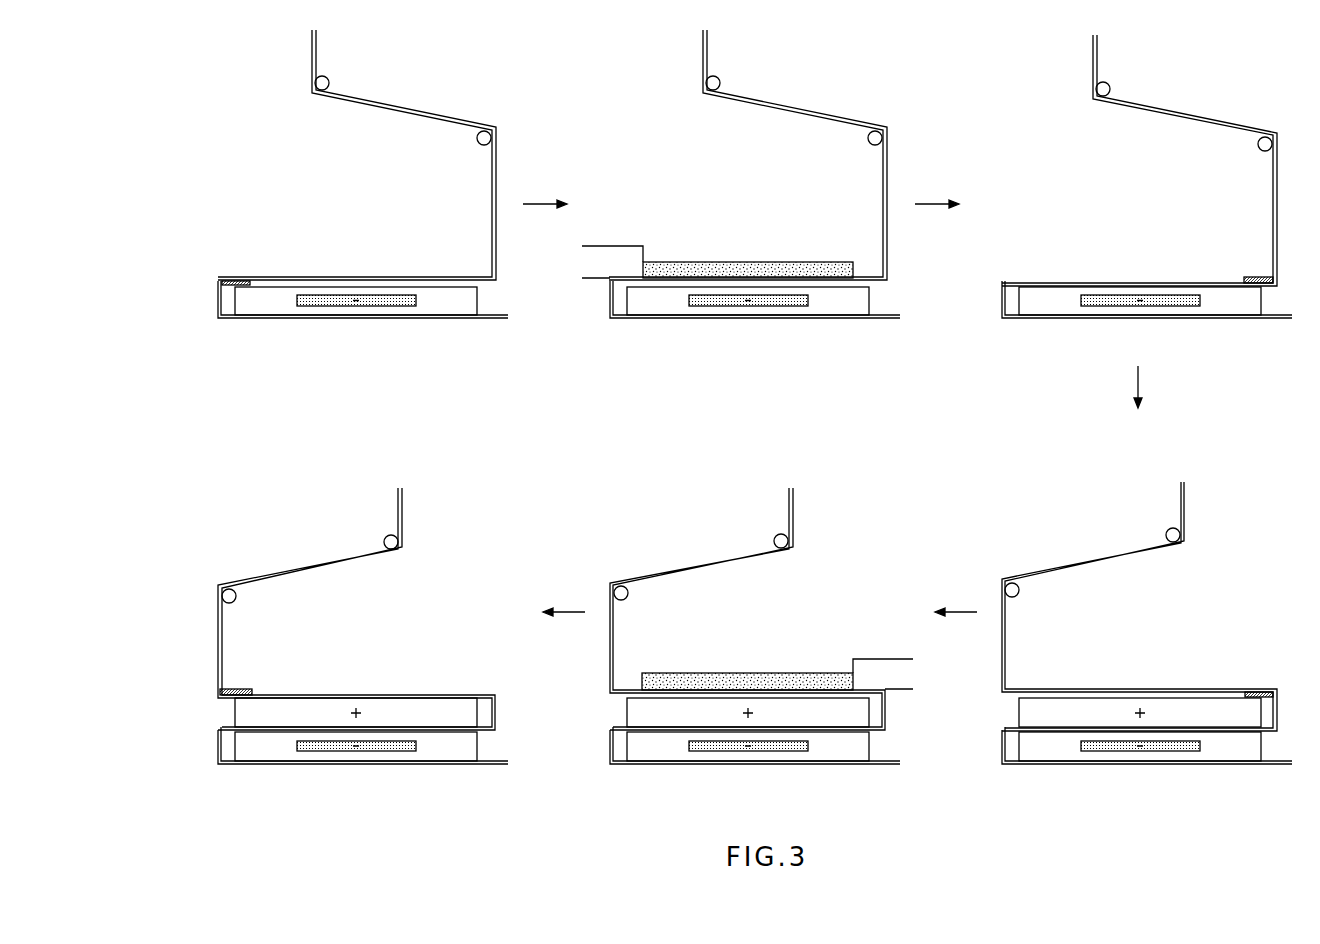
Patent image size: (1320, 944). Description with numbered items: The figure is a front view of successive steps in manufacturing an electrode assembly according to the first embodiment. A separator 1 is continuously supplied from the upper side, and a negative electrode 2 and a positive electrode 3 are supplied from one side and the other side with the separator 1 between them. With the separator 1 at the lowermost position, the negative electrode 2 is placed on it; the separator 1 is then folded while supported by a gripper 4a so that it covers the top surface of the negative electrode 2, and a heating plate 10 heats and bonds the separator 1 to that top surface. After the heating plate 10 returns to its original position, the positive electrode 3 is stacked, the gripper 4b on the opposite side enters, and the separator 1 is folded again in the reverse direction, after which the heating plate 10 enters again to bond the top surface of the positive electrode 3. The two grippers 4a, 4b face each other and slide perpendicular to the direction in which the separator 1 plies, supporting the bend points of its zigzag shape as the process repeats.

The separator 1 is at (220, 742).
The negative electrode 2 is at (265, 751).
The positive electrode 3 is at (252, 711).
The gripper 4a is at (233, 280).
The gripper 4b is at (1257, 277).
The heating plate 10 is at (745, 262).